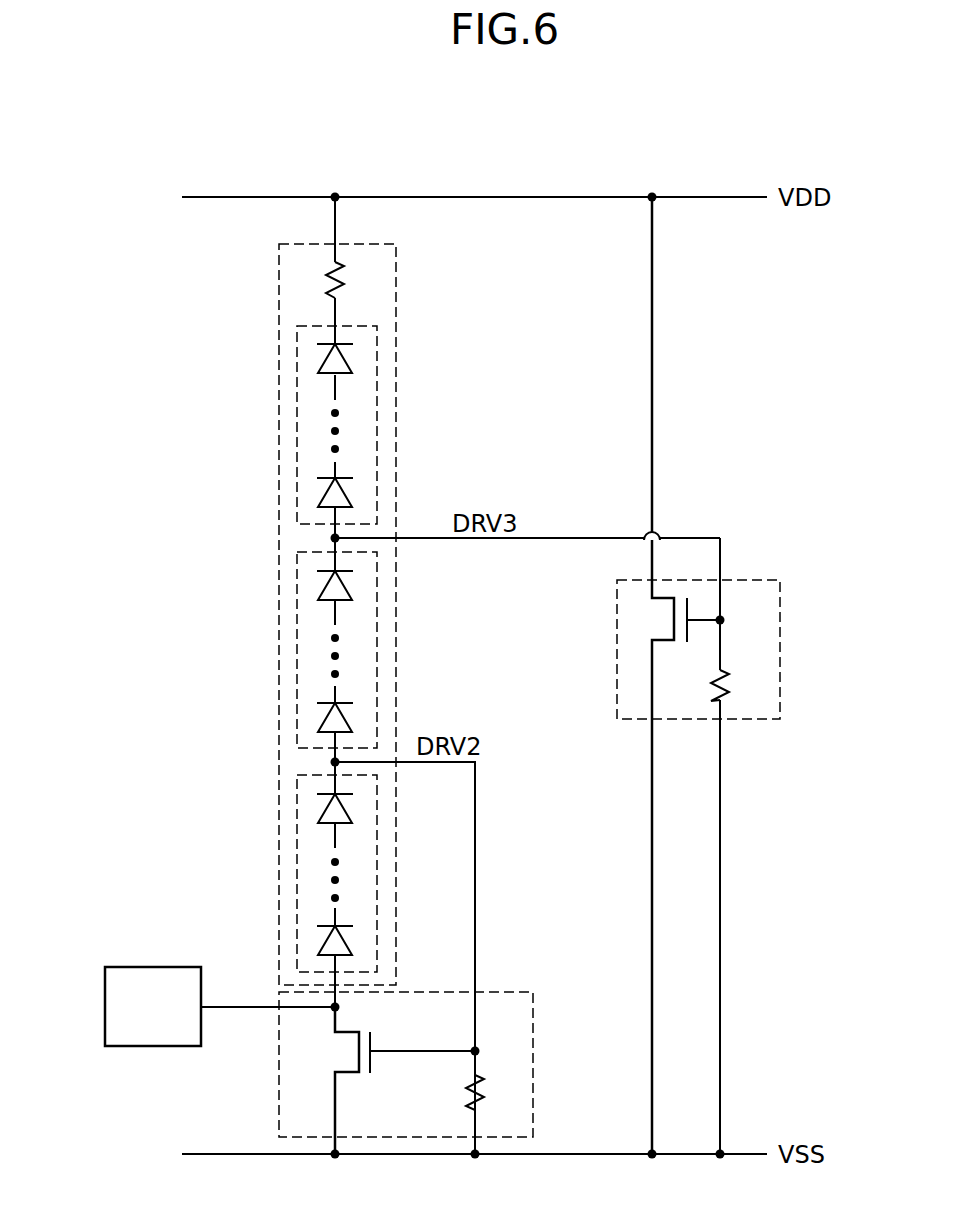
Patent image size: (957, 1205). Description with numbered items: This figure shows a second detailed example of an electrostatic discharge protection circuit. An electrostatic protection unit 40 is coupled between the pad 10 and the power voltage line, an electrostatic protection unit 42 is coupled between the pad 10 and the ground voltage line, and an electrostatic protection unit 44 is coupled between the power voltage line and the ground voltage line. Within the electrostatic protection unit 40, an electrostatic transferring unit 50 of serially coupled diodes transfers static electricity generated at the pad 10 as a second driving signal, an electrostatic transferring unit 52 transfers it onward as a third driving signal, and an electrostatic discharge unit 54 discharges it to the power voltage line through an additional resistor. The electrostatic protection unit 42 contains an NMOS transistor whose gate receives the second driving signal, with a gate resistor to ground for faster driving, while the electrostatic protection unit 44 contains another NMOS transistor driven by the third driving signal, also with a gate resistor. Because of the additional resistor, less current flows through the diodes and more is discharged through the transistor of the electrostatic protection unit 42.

The pad 10 is at (105, 1008).
The electrostatic protection unit 40 is at (279, 547).
The electrostatic protection unit 42 is at (279, 1087).
The electrostatic protection unit 44 is at (780, 637).
The electrostatic transferring unit 50 is at (297, 873).
The electrostatic transferring unit 52 is at (297, 649).
The electrostatic discharge unit 54 is at (297, 425).